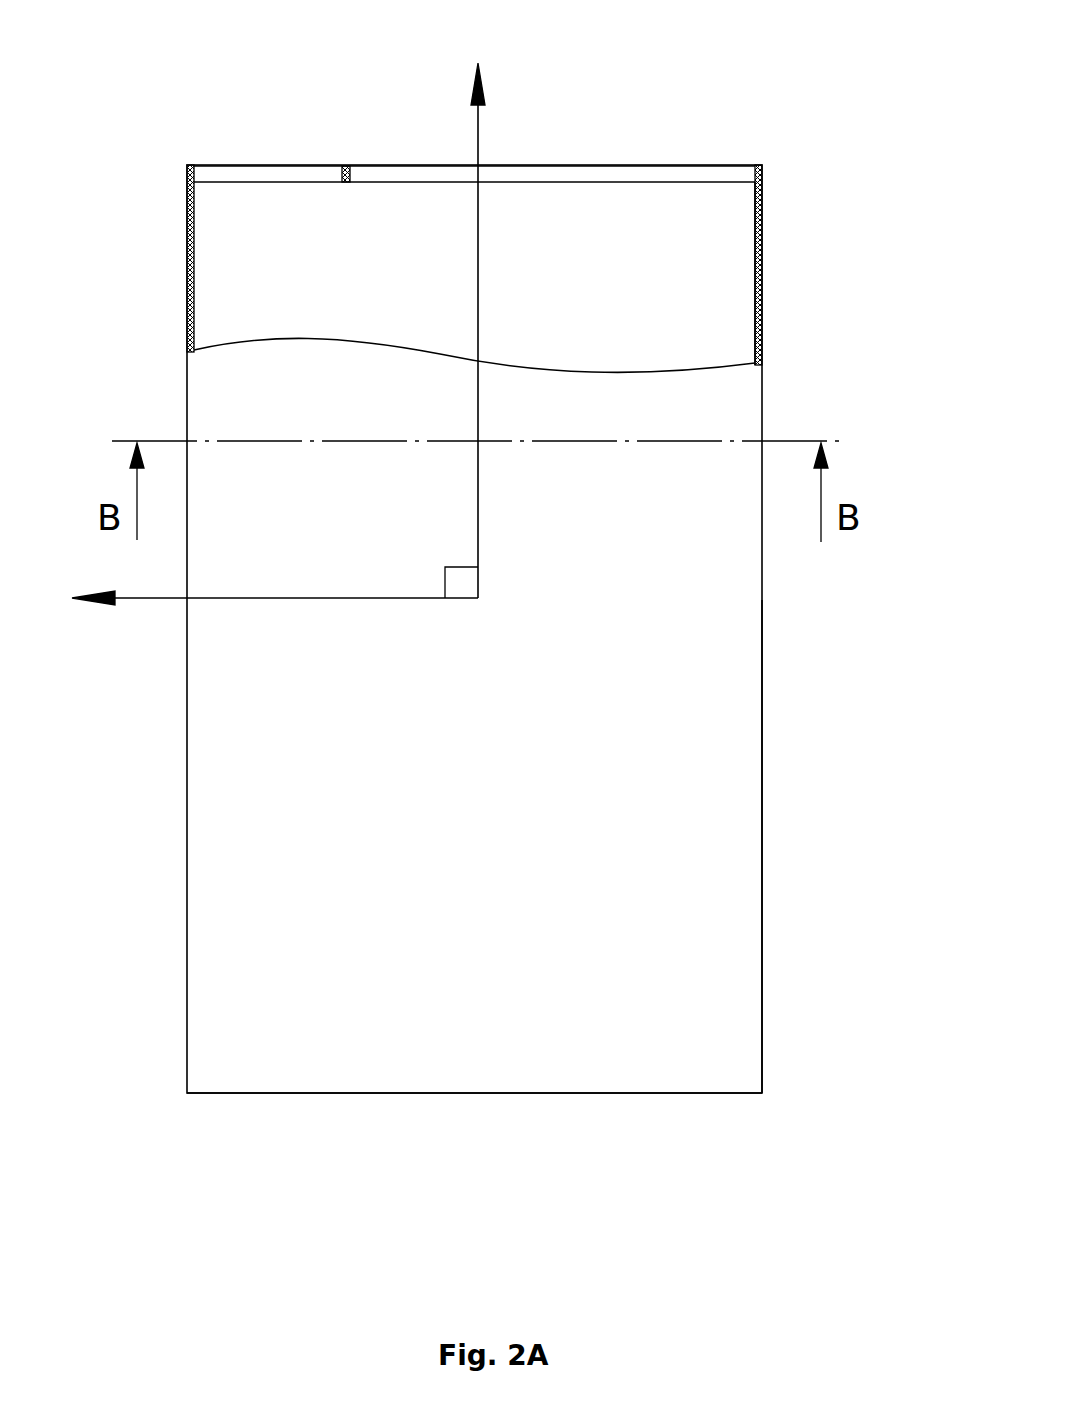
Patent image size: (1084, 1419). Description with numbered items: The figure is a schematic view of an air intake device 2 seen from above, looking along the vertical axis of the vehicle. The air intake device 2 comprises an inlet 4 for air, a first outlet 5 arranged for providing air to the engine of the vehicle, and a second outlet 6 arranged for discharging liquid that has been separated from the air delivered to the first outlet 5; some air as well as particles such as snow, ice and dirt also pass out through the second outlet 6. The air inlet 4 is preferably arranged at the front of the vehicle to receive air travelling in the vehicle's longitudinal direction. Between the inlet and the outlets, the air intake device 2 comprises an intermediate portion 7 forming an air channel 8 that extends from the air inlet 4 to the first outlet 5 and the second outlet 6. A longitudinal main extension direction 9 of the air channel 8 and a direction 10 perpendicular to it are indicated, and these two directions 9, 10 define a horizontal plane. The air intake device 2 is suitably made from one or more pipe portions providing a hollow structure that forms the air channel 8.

The air intake device 2 is at (832, 196).
The inlet 4 is at (664, 1145).
The first outlet 5 is at (663, 95).
The second outlet 6 is at (292, 95).
The intermediate portion 7 is at (713, 810).
The air channel 8 is at (714, 302).
The longitudinal main extension direction 9 is at (478, 140).
The direction perpendicular to the longitudinal main extension direction 10 is at (153, 598).